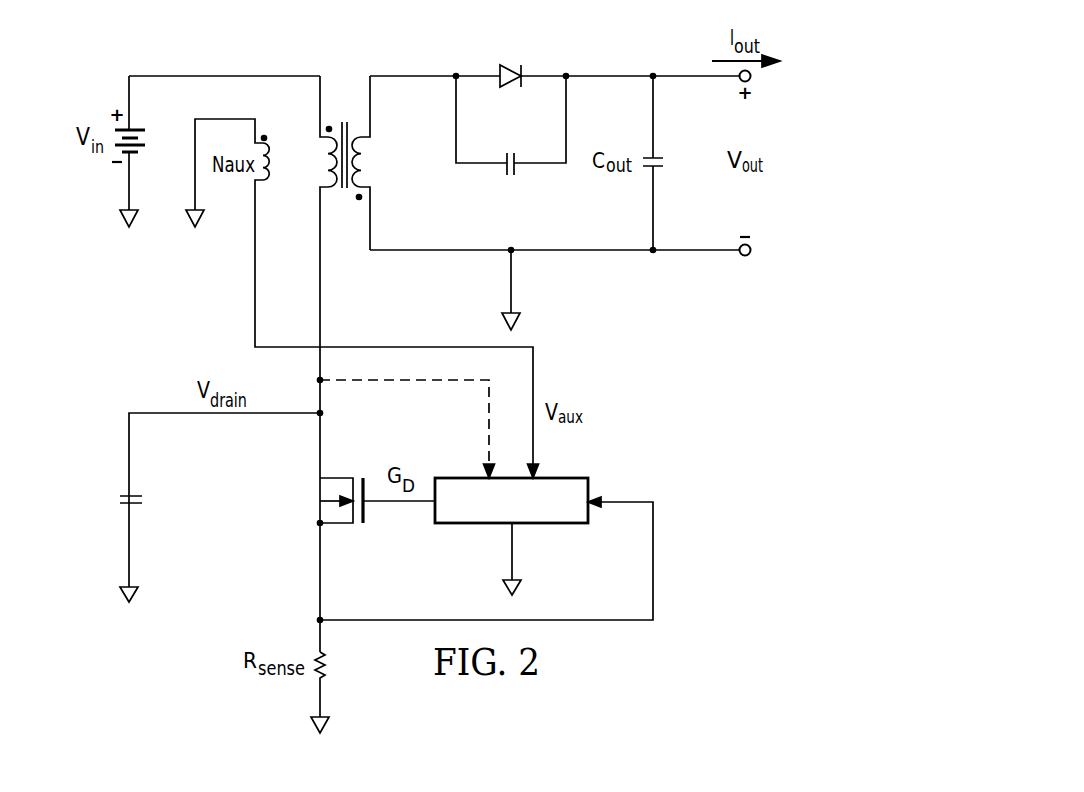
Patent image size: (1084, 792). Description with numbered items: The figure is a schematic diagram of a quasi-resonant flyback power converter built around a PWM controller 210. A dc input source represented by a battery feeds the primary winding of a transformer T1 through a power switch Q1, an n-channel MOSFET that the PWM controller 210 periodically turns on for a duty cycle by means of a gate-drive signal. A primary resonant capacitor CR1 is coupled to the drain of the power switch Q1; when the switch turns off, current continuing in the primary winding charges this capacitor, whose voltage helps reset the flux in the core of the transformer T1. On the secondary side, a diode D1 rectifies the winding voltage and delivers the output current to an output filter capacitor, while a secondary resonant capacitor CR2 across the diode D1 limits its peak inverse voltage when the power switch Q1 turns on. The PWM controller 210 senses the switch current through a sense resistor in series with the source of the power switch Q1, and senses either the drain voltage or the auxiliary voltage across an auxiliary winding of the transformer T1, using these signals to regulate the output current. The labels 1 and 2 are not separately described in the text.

The PWM controller 210 is at (543, 523).
The diode D1 1 is at (511, 62).
The capacitor CR2 2 is at (511, 125).
The diode D1 is at (511, 62).
The power switch Q1 is at (326, 502).
The transformer T1 is at (344, 277).
The primary resonant capacitor CR1 is at (107, 542).
The secondary resonant capacitor CR2 is at (511, 125).